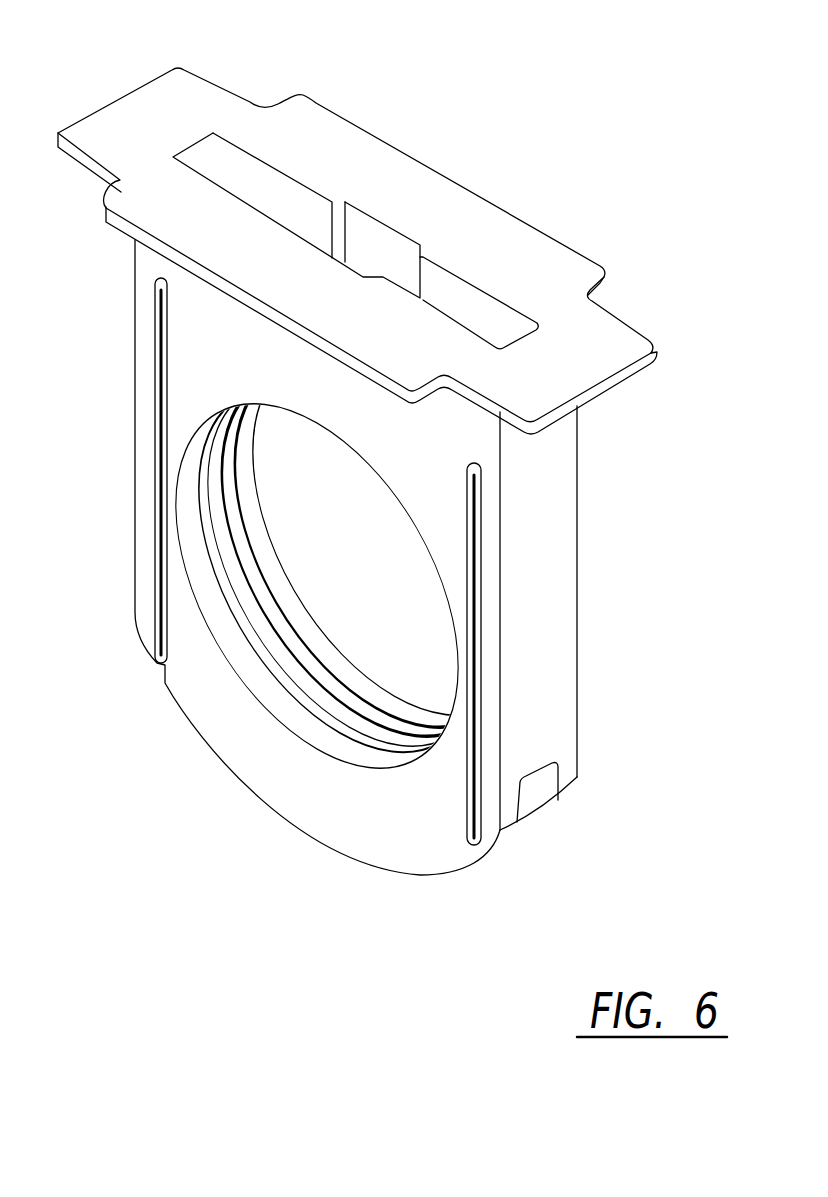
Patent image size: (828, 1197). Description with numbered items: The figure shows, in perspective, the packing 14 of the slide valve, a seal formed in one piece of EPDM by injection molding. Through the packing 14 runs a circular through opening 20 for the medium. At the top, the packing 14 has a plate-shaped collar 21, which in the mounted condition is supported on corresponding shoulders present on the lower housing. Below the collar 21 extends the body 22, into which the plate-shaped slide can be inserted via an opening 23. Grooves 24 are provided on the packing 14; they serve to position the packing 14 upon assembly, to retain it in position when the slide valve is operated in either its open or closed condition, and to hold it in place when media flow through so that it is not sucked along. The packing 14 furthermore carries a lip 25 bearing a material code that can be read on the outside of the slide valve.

The packing 14 is at (387, 493).
The circular through opening 20 is at (377, 637).
The plate-shaped collar 21 is at (307, 110).
The body 22 is at (560, 568).
The opening 23 is at (400, 252).
The grooves 24 is at (158, 343).
The lip 25 is at (603, 328).